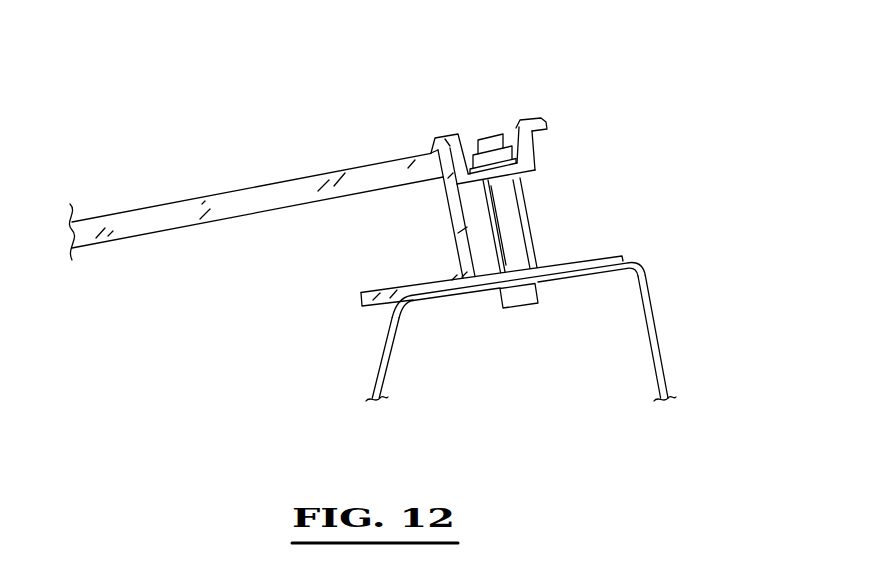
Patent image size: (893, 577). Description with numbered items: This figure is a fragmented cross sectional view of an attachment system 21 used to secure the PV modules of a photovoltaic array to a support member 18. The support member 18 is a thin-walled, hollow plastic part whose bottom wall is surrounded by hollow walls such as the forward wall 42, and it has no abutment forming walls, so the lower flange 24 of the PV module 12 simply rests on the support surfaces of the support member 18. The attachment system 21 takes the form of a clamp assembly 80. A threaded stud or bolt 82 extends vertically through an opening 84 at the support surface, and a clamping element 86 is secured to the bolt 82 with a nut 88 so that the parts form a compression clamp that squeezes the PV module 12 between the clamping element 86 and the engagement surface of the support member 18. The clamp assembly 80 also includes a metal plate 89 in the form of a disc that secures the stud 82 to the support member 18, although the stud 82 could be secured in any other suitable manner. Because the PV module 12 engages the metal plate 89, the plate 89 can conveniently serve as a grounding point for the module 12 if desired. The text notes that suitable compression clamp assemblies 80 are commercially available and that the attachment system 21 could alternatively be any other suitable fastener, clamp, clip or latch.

The PV module 12 is at (172, 203).
The support member 18 is at (660, 311).
The attachment system 21 is at (402, 58).
The lower flange 24 is at (380, 289).
The forward wall 42 is at (386, 338).
The clamp assembly 80 is at (556, 162).
The threaded stud or bolt 82 is at (527, 308).
The opening 84 is at (503, 287).
The clamping element 86 is at (550, 127).
The nut 88 is at (517, 152).
The metal plate 89 is at (530, 301).